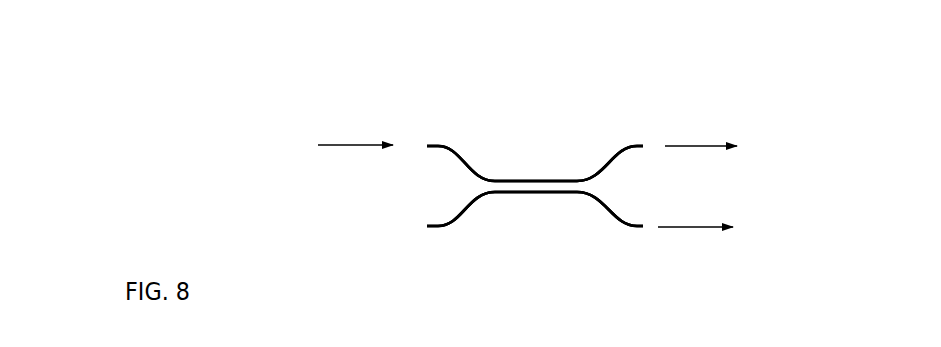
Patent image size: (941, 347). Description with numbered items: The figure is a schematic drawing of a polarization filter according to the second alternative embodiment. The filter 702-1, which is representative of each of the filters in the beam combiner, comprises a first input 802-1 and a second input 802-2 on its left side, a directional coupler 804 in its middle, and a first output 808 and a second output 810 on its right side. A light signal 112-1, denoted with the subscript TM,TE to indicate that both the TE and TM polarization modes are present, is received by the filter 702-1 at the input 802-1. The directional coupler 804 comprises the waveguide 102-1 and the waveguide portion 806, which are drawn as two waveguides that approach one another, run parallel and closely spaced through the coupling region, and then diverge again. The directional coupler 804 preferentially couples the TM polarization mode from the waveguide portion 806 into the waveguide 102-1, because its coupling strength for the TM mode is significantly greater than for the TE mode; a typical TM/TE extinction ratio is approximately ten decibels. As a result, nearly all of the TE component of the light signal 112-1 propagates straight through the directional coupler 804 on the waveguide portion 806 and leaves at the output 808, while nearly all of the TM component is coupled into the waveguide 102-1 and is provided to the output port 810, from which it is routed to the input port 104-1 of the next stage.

The filter 702-1 is at (372, 62).
The input 802-1 is at (440, 145).
The input 802-2 is at (438, 225).
The waveguide portion 806 is at (450, 147).
The directional coupler 804 is at (546, 117).
The output 808 is at (635, 137).
The output port 810 is at (627, 224).
The waveguide 102-1 is at (448, 224).
The light signal 112-1 is at (493, 171).
The input port 104-1 is at (840, 244).